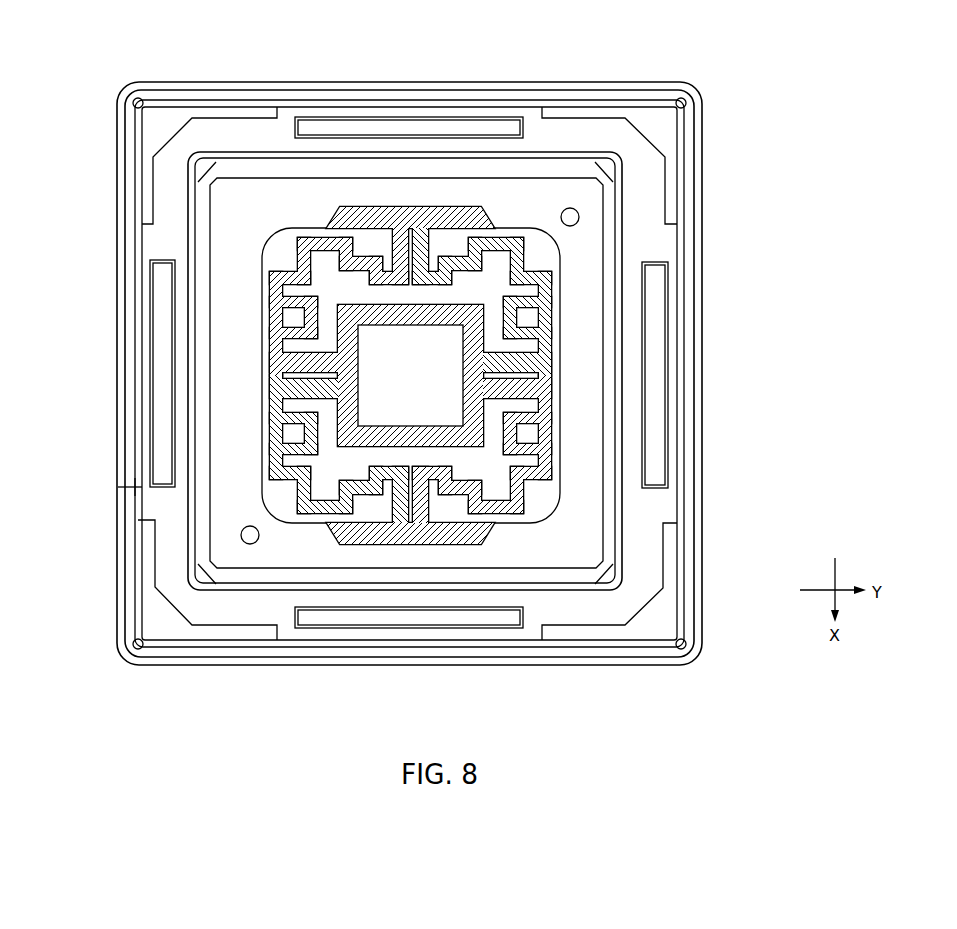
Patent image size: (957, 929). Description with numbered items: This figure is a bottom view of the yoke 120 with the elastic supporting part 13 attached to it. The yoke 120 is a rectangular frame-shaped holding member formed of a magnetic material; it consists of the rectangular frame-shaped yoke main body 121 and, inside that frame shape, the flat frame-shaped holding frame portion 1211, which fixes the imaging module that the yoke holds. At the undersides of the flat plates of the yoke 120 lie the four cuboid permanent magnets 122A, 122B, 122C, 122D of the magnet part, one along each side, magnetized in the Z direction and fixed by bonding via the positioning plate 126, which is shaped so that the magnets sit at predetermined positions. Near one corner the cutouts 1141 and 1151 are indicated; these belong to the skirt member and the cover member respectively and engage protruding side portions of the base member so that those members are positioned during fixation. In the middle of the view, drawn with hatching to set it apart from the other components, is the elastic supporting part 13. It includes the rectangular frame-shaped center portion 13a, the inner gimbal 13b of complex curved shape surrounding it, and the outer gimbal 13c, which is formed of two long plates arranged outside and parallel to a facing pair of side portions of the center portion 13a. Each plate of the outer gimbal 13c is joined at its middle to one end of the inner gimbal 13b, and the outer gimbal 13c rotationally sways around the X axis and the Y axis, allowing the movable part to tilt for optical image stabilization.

The yoke 120 is at (260, 44).
The yoke main body 121 is at (189, 97).
The positioning plate 126 is at (166, 197).
The holding frame portion 1211 is at (237, 196).
The cutout 1141 is at (135, 487).
The cutout 1151 is at (125, 487).
The permanent magnet 122A is at (345, 615).
The permanent magnet 122B is at (160, 393).
The permanent magnet 122C is at (408, 117).
The permanent magnet 122D is at (660, 397).
The elastic supporting part 13 is at (532, 375).
The center portion 13a is at (484, 306).
The inner gimbal 13b is at (551, 327).
The outer gimbal 13c is at (495, 215).